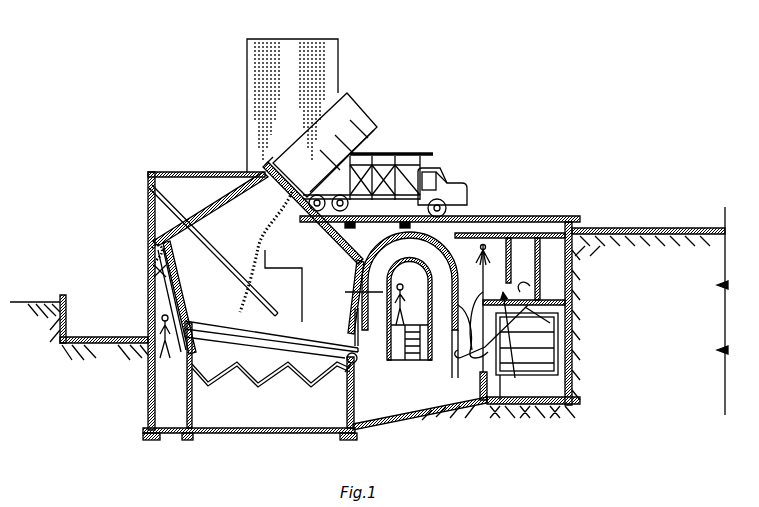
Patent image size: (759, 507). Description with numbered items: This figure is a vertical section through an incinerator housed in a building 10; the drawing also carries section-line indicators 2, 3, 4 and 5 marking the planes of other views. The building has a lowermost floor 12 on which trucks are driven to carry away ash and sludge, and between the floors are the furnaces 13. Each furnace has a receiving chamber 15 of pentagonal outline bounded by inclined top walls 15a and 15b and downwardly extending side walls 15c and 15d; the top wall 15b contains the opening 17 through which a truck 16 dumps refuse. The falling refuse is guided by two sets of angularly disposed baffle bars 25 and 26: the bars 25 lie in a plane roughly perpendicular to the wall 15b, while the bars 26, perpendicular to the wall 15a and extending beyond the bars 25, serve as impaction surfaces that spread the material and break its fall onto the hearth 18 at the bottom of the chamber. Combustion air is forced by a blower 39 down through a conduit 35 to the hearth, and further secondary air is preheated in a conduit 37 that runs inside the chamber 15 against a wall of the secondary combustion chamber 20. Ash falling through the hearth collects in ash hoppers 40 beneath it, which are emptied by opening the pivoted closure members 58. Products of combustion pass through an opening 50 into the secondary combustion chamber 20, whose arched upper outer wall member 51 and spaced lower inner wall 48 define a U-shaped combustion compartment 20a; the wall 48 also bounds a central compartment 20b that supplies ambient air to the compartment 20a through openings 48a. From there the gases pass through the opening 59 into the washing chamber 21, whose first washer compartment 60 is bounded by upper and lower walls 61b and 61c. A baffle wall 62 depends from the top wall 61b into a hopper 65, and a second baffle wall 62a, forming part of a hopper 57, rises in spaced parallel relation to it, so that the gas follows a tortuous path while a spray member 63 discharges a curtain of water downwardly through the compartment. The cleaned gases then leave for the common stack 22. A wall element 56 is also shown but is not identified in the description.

The section line 2- 2 is at (292, 23).
The section line 3- 3 is at (128, 283).
The section line 4- 4 is at (135, 180).
The section line 5- 5 is at (135, 392).
The building 10 is at (457, 165).
The lowermost floor 12 is at (212, 434).
The furnaces 13 is at (150, 184).
The receiving chamber 15 is at (290, 292).
The top wall 15a is at (217, 208).
The top wall 15b is at (319, 231).
The side wall 15c is at (186, 290).
The side wall 15d is at (353, 268).
The truck 16 is at (357, 118).
The opening 17 is at (274, 162).
The hearth 18 is at (250, 388).
The secondary combustion chamber 20 is at (418, 390).
The combustion compartment 20a is at (402, 421).
The central compartment 20b is at (410, 281).
The washing chamber 21 is at (572, 331).
The stack 22 is at (332, 62).
The baffle bars 25 is at (259, 236).
The baffle bars 26 is at (256, 297).
The conduit 35 is at (151, 268).
The conduit 37 is at (350, 318).
The blower 39 is at (152, 234).
The ash hoppers 40 is at (238, 379).
The lower inner wall 48 is at (440, 372).
The openings 48a is at (345, 292).
The opening 50 is at (345, 373).
The upper outer wall member 51 is at (444, 227).
The partition wall 56 is at (376, 378).
The hopper 57 is at (498, 417).
The closure members 58 is at (263, 387).
The opening 59 is at (458, 368).
The washer compartment 60 is at (527, 346).
The upper wall 61b is at (543, 237).
The lower wall 61c is at (552, 306).
The baffle wall 62 is at (514, 238).
The baffle wall 62a is at (491, 332).
The spray member 63 is at (488, 240).
The hopper 65 is at (532, 284).